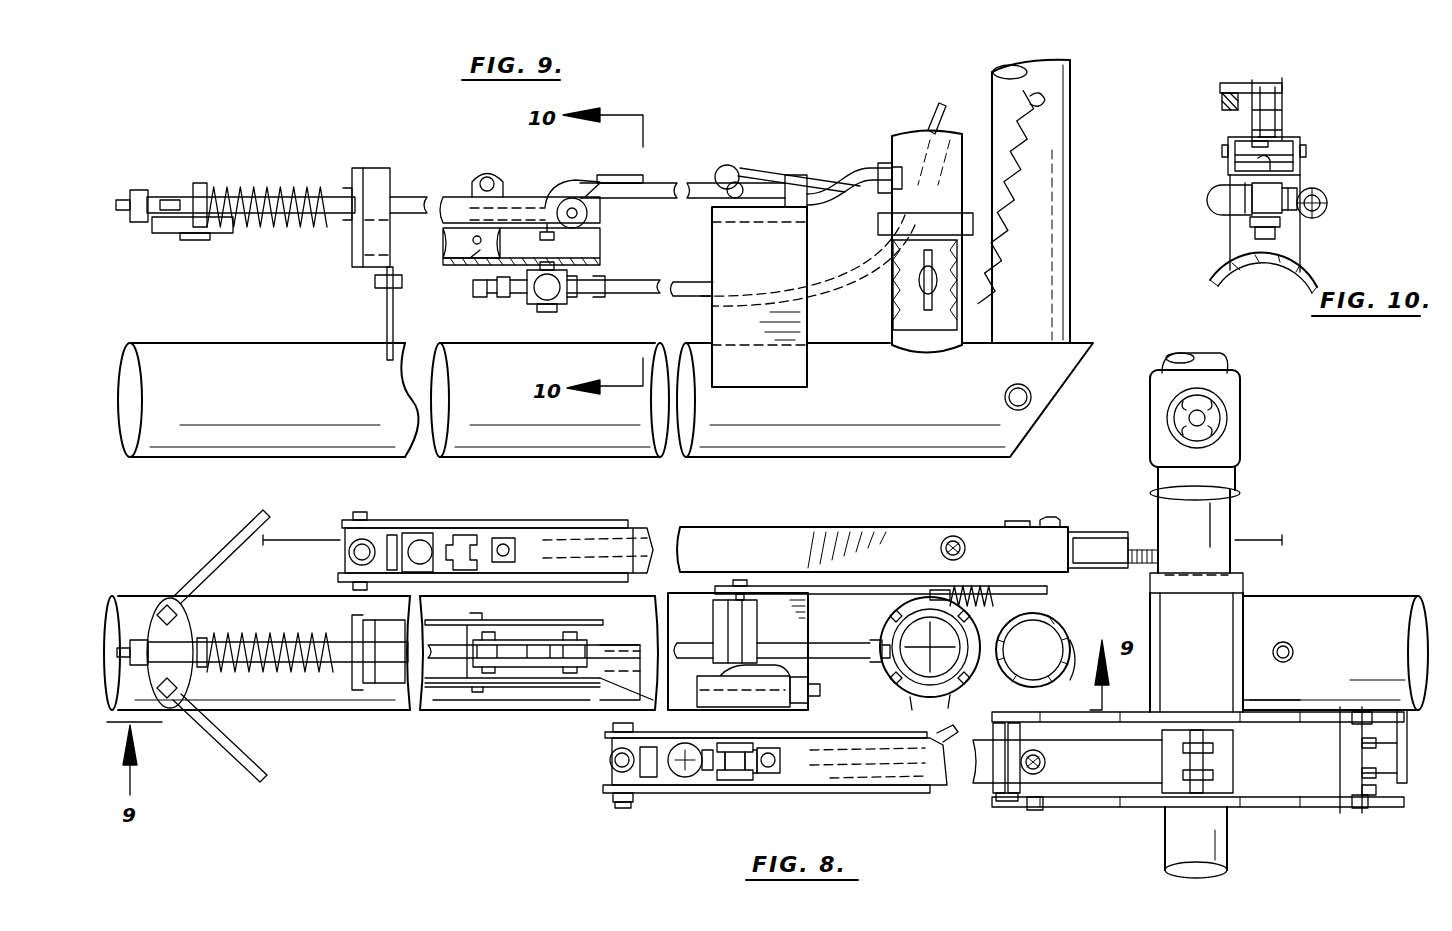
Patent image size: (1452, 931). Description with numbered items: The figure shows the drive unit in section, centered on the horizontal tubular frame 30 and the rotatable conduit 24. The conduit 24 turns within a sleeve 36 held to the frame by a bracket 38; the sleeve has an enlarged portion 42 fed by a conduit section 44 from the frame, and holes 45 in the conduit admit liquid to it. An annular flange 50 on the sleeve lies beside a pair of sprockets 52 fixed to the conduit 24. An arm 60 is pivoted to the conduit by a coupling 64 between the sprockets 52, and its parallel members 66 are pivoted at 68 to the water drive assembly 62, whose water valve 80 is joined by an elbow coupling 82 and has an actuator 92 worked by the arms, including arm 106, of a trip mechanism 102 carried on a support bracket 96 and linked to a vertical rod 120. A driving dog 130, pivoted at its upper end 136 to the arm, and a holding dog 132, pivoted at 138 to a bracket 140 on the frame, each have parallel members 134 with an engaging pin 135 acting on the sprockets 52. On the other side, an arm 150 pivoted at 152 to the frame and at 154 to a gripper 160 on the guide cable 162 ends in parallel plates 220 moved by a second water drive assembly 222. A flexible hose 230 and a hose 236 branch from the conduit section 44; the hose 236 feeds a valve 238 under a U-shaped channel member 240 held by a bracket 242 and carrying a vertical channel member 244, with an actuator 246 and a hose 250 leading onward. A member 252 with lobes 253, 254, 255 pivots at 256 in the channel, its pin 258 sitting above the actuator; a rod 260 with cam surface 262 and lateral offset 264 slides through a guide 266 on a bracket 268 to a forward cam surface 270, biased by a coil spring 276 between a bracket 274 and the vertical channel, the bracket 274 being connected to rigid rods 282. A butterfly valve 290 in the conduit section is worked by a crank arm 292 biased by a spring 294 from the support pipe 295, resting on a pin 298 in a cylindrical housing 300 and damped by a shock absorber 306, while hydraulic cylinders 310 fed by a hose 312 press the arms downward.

In FIG. 8, the conduit 24 is at (1185, 355).
In FIG. 9, the tubular frame 30 is at (412, 343).
In FIG. 10, the tubular frame 30 is at (1312, 280).
In FIG. 8, the tubular frame 30 is at (403, 700).
In FIG. 8, the sleeve 36 is at (1232, 508).
In FIG. 8, the bracket 38 is at (1245, 586).
In FIG. 8, the portion of enlarged diameter 42 is at (1157, 398).
In FIG. 9, the conduit section 44 is at (955, 135).
In FIG. 8, the conduit section 44 is at (912, 697).
In FIG. 8, the holes 45 is at (1174, 434).
In FIG. 8, the annular flange 50 is at (1232, 700).
In FIG. 8, the sprockets 52 is at (1270, 723).
In FIG. 8, the arm 60 is at (983, 775).
In FIG. 8, the water drive assembly 62 is at (752, 776).
In FIG. 8, the coupling 64 is at (1233, 758).
In FIG. 8, the parallel members 66 is at (808, 738).
In FIG. 8, the pivot 68 is at (622, 808).
In FIG. 8, the water valve 80 is at (690, 752).
In FIG. 8, the elbow coupling 82 is at (610, 762).
In FIG. 8, the actuator 92 is at (686, 777).
In FIG. 8, the support bracket 96 is at (742, 780).
In FIG. 8, the trip mechanism 102 is at (735, 782).
In FIG. 8, the arm 106 is at (705, 775).
In FIG. 8, the vertical rod 120 is at (775, 773).
In FIG. 8, the driving dog 130 is at (990, 800).
In FIG. 8, the holding dog 132 is at (1392, 758).
In FIG. 8, the parallel members 134 is at (1342, 776).
In FIG. 8, the engaging pin 135 is at (1036, 812).
In FIG. 8, the upper end 136 is at (1005, 803).
In FIG. 8, the pivot 138 is at (1376, 795).
In FIG. 8, the bracket 140 is at (1400, 716).
In FIG. 8, the arm 150 is at (678, 527).
In FIG. 9, the pivot 152 is at (1025, 405).
In FIG. 8, the pivot 152 is at (1020, 521).
In FIG. 8, the pivot 154 is at (1054, 517).
In FIG. 8, the gripper 160 is at (1095, 534).
In FIG. 8, the guide cable 162 is at (293, 540).
In FIG. 8, the parallel plates 220 is at (520, 528).
In FIG. 8, the water drive assembly 222 is at (450, 532).
In FIG. 8, the flexible hose 230 is at (944, 734).
In FIG. 9, the hose 236 is at (640, 282).
In FIG. 10, the hose 236 is at (1326, 210).
In FIG. 8, the hose 236 is at (700, 652).
In FIG. 9, the valve 238 is at (562, 306).
In FIG. 10, the valve 238 is at (1262, 203).
In FIG. 9, the channel member 240 is at (446, 262).
In FIG. 10, the channel member 240 is at (1228, 163).
In FIG. 8, the channel member 240 is at (468, 684).
In FIG. 9, the bracket 242 is at (386, 314).
In FIG. 10, the bracket 242 is at (1300, 242).
In FIG. 9, the vertical channel member 244 is at (370, 168).
In FIG. 8, the vertical channel member 244 is at (363, 690).
In FIG. 9, the actuator 246 is at (600, 250).
In FIG. 10, the actuator 246 is at (1300, 156).
In FIG. 9, the hose 250 is at (490, 298).
In FIG. 9, the member 252 is at (520, 197).
In FIG. 10, the member 252 is at (1246, 131).
In FIG. 8, the member 252 is at (530, 668).
In FIG. 9, the lobe 253 is at (480, 198).
In FIG. 9, the lobe 254 is at (470, 282).
In FIG. 9, the lobe 255 is at (586, 182).
In FIG. 10, the lobe 255 is at (1275, 122).
In FIG. 9, the pivot 256 is at (476, 236).
In FIG. 10, the pivot 256 is at (1222, 148).
In FIG. 8, the pivot 256 is at (478, 693).
In FIG. 9, the pin 258 is at (554, 234).
In FIG. 10, the pin 258 is at (1300, 148).
In FIG. 9, the rod 260 is at (337, 212).
In FIG. 10, the rod 260 is at (1222, 102).
In FIG. 8, the rod 260 is at (340, 663).
In FIG. 9, the cam surface 262 is at (558, 203).
In FIG. 9, the lateral offset 264 is at (642, 176).
In FIG. 10, the lateral offset 264 is at (1232, 83).
In FIG. 8, the lateral offset 264 is at (612, 680).
In FIG. 9, the guide 266 is at (798, 178).
In FIG. 8, the guide 266 is at (822, 690).
In FIG. 9, the bracket 268 is at (808, 332).
In FIG. 8, the bracket 268 is at (810, 612).
In FIG. 8, the cam surface 270 is at (750, 677).
In FIG. 9, the bracket 274 is at (175, 197).
In FIG. 8, the bracket 274 is at (150, 620).
In FIG. 9, the coil spring 276 is at (255, 192).
In FIG. 8, the coil spring 276 is at (242, 633).
In FIG. 9, the rigid rods 282 is at (213, 233).
In FIG. 8, the rigid rods 282 is at (255, 522).
In FIG. 9, the butterfly valve 290 is at (920, 290).
In FIG. 8, the butterfly valve 290 is at (950, 665).
In FIG. 9, the crank arm 292 is at (835, 180).
In FIG. 8, the crank arm 292 is at (862, 586).
In FIG. 9, the spring 294 is at (1035, 165).
In FIG. 8, the spring 294 is at (978, 588).
In FIG. 9, the support pipe 295 is at (1068, 78).
In FIG. 8, the support pipe 295 is at (1071, 640).
In FIG. 9, the pin 298 is at (740, 170).
In FIG. 8, the pin 298 is at (740, 580).
In FIG. 9, the cylindrical housing 300 is at (722, 178).
In FIG. 8, the cylindrical housing 300 is at (728, 612).
In FIG. 9, the shock absorber 306 is at (940, 102).
In FIG. 8, the shock absorber 306 is at (1033, 650).
In FIG. 8, the hydraulic cylinders 310 is at (958, 538).
In FIG. 8, the hose 312 is at (1293, 650).